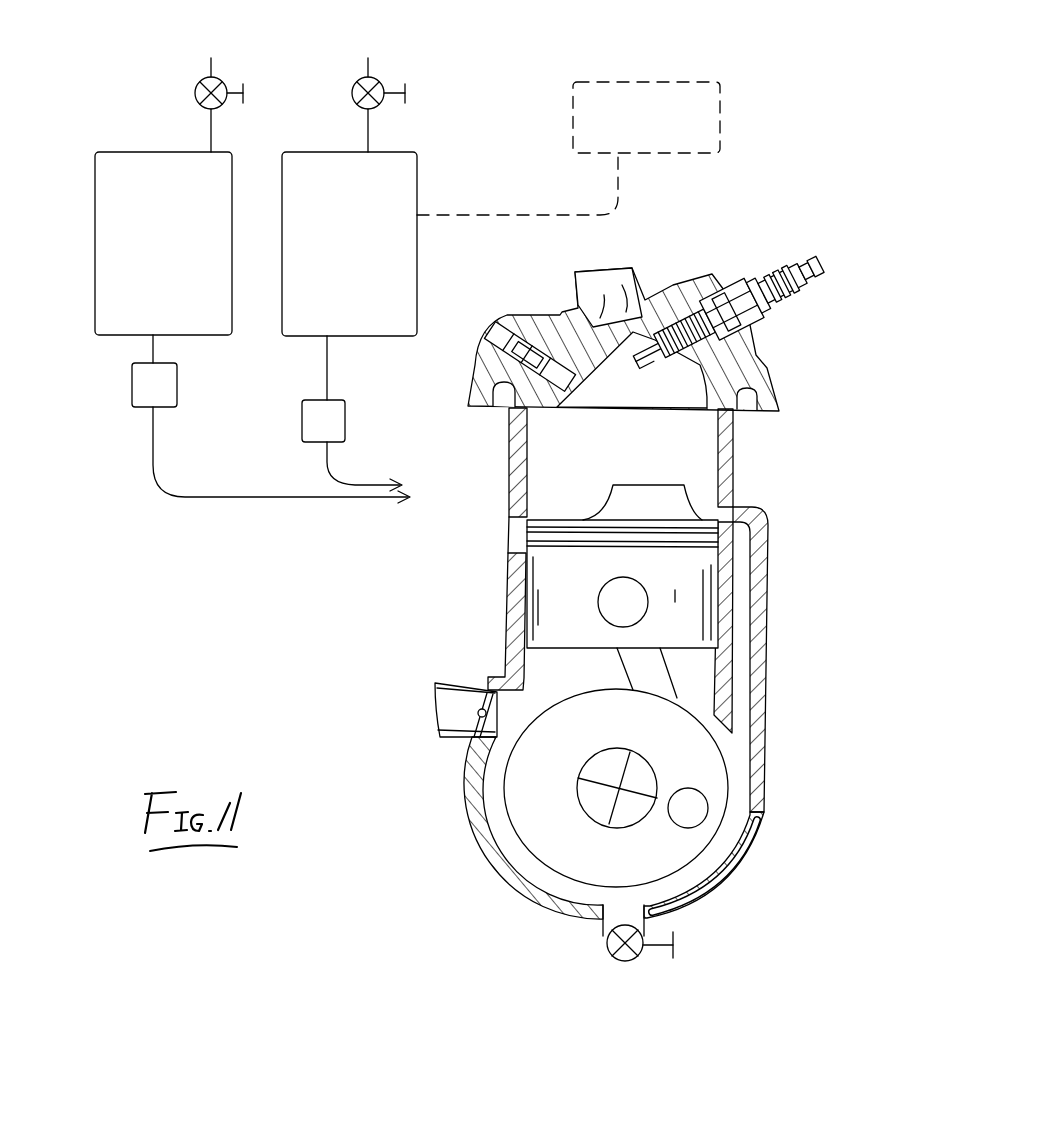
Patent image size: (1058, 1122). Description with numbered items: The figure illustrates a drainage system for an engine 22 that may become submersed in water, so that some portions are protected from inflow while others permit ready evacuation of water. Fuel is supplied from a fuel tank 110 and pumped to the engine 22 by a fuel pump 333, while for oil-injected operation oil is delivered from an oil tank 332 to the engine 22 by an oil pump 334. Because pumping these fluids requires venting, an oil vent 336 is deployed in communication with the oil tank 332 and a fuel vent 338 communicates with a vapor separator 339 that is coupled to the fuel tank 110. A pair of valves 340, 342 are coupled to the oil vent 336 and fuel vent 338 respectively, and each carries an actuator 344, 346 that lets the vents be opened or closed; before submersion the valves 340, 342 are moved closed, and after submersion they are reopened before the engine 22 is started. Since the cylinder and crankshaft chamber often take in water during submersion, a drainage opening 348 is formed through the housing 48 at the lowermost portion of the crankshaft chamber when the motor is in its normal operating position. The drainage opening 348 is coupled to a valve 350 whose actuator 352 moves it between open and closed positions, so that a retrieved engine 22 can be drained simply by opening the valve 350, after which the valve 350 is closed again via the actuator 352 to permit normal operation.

The engine 22 is at (636, 625).
The housing 48 is at (763, 823).
The fuel tank 110 is at (722, 122).
The oil tank 332 is at (96, 273).
The fuel pump 333 is at (345, 422).
The oil pump 334 is at (177, 388).
The oil vent 336 is at (213, 132).
The fuel vent 338 is at (370, 132).
The vapor separator 339 is at (417, 172).
The valve 340 is at (223, 83).
The valve 342 is at (379, 83).
The actuator 344 is at (243, 93).
The actuator 346 is at (405, 93).
The drainage opening 348 is at (600, 921).
The valve 350 is at (633, 960).
The actuator 352 is at (673, 940).